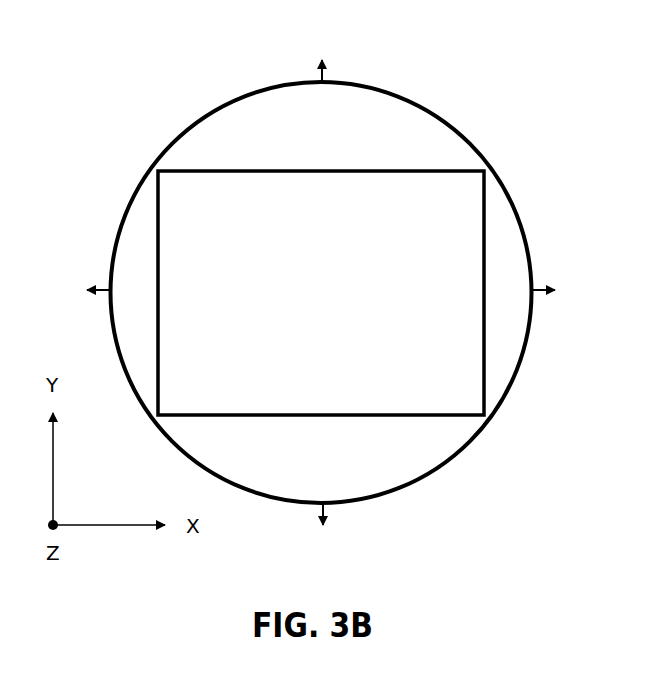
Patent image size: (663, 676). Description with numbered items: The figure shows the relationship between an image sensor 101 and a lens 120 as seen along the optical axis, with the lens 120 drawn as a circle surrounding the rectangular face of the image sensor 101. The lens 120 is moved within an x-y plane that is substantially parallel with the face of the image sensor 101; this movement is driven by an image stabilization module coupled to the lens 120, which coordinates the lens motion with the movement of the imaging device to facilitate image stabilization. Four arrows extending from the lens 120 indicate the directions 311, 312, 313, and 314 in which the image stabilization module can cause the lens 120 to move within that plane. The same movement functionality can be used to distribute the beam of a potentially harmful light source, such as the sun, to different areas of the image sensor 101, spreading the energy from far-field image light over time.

The image sensor 101 is at (427, 303).
The lens 120 is at (433, 472).
The direction 311 is at (328, 62).
The direction 312 is at (548, 283).
The direction 313 is at (328, 524).
The direction 314 is at (89, 284).